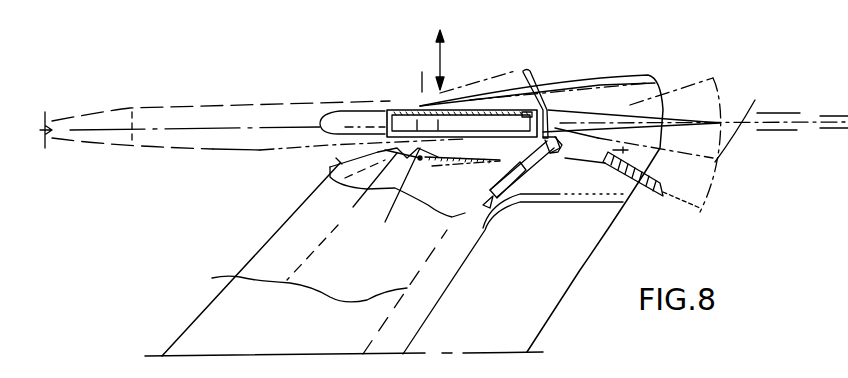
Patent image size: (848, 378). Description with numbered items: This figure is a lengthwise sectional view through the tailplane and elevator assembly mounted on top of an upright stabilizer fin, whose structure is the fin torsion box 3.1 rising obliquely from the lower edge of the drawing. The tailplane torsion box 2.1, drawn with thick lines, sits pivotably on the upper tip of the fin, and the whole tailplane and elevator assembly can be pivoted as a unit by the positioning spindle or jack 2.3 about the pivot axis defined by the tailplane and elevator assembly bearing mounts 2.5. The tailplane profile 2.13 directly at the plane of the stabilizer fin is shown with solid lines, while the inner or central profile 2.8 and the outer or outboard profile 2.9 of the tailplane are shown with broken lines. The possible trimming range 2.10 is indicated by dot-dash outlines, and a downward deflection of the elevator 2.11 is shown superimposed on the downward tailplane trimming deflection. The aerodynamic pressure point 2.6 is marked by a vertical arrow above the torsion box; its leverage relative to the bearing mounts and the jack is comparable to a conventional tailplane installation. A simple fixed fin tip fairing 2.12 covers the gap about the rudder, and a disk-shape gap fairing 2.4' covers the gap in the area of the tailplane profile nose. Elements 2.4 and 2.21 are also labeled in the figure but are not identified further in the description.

The tailplane torsion box 2.1 is at (408, 125).
The positioning spindle or jack 2.3 is at (528, 204).
The flap 2.4 is at (521, 123).
The disk-shape gap fairing 2.4' is at (296, 170).
The tailplane and elevator assembly bearing mounts 2.5 is at (465, 199).
The aerodynamic pressure point 2.6 is at (441, 47).
The inner or central profile 2.8 is at (150, 108).
The outer or outboard profile 2.9 is at (768, 131).
The trimming range 2.10 is at (720, 82).
The elevator 2.11 is at (688, 205).
The fixed fin tip fairing 2.12 is at (595, 95).
The tailplane profile at the stabilizer fin 2.13 is at (340, 110).
The pylon 2.21 is at (415, 192).
The fin torsion box 3.1 is at (266, 308).